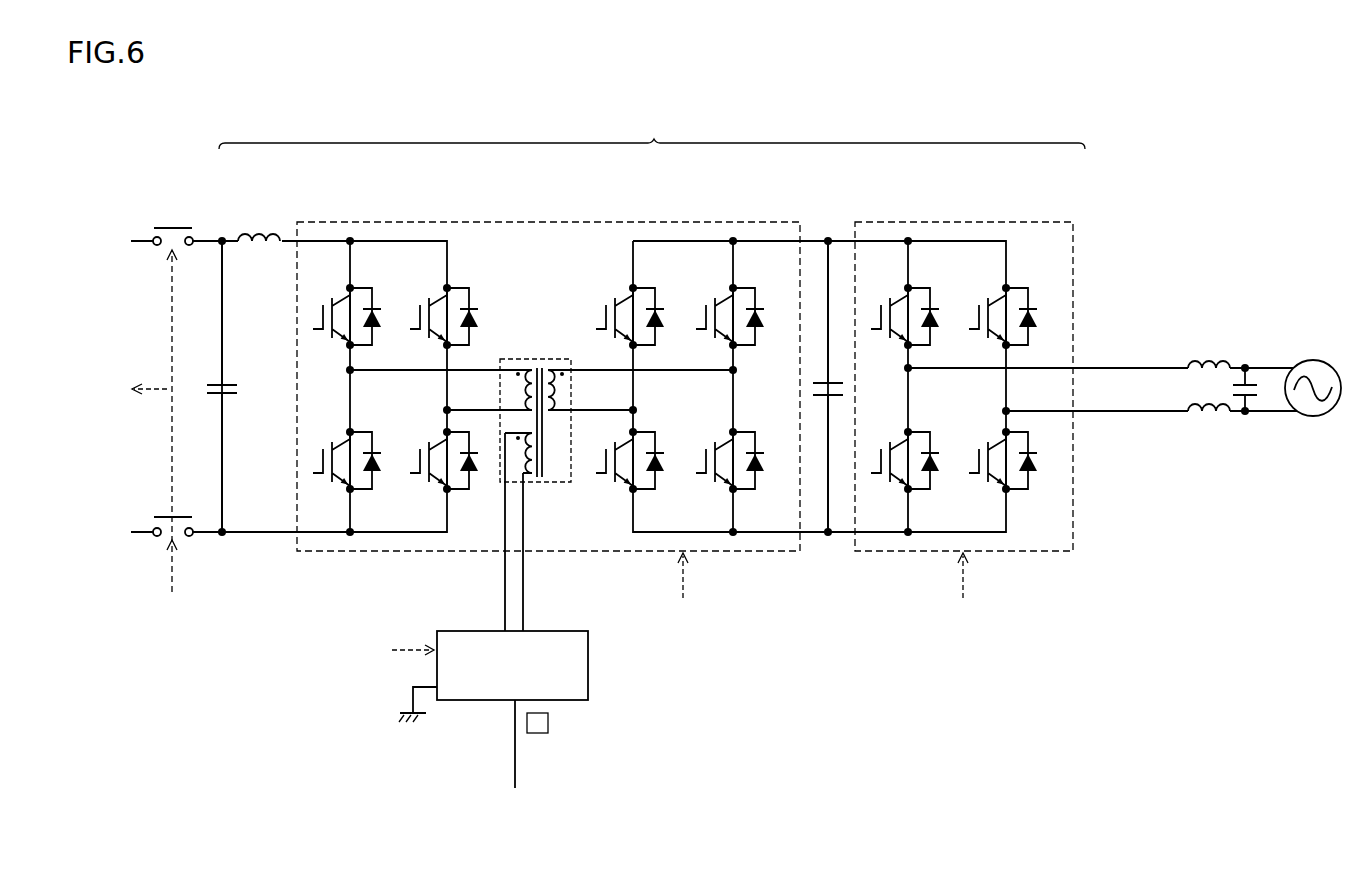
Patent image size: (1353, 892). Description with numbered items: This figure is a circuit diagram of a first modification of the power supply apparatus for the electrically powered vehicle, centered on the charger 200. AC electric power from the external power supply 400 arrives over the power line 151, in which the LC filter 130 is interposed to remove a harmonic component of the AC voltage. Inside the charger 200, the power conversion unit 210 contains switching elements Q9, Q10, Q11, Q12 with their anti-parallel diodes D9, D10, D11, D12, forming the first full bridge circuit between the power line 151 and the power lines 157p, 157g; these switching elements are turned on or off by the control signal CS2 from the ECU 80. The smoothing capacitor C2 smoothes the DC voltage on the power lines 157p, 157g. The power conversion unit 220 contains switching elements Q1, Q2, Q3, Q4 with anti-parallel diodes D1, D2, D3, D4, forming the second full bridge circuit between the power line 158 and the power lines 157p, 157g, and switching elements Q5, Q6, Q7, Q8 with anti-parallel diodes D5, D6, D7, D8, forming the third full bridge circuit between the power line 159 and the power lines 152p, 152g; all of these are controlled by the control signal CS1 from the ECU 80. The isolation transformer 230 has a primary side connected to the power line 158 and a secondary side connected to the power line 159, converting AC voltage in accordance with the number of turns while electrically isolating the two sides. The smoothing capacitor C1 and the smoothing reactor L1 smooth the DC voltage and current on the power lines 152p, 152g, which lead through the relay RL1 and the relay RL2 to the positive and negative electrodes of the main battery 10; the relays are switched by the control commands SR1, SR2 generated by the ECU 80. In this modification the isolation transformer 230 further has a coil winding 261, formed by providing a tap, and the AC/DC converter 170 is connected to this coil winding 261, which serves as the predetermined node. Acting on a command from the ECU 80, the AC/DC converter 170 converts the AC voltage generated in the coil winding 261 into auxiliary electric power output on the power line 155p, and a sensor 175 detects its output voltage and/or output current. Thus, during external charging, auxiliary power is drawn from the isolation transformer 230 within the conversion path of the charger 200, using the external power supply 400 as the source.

The charger 200 is at (652, 131).
The relay RL1 is at (172, 222).
The relay RL2 is at (162, 540).
The control command SR1 is at (175, 438).
The control command SR2 is at (175, 438).
The main battery 10 is at (117, 390).
The smoothing reactor L1 is at (256, 234).
The smoothing capacitor C1 is at (237, 386).
The power line 152p is at (320, 241).
The power line 152g is at (317, 537).
The power conversion unit 220 is at (553, 222).
The power conversion unit 210 is at (965, 222).
The power line 157p is at (762, 241).
The power line 157g is at (765, 533).
The smoothing capacitor C2 is at (843, 382).
The switching element Q1 is at (606, 300).
The switching element Q2 is at (615, 483).
The switching element Q3 is at (706, 300).
The switching element Q4 is at (707, 444).
The switching element Q5 is at (323, 300).
The switching element Q6 is at (323, 444).
The switching element Q7 is at (420, 300).
The switching element Q8 is at (420, 444).
The switching element Q9 is at (881, 300).
The switching element Q10 is at (881, 444).
The switching element Q11 is at (979, 300).
The switching element Q12 is at (979, 444).
The anti-parallel diode D1 is at (663, 323).
The anti-parallel diode D2 is at (663, 466).
The anti-parallel diode D3 is at (763, 323).
The anti-parallel diode D4 is at (763, 466).
The anti-parallel diode D5 is at (380, 323).
The anti-parallel diode D6 is at (380, 466).
The anti-parallel diode D7 is at (477, 323).
The anti-parallel diode D8 is at (473, 486).
The anti-parallel diode D9 is at (938, 323).
The anti-parallel diode D10 is at (938, 466).
The anti-parallel diode D11 is at (1036, 323).
The anti-parallel diode D12 is at (1036, 466).
The power line 158 is at (587, 423).
The power line 159 is at (490, 420).
The isolation transformer 230 is at (562, 482).
The coil winding 261 is at (523, 476).
The AC/DC converter 170 is at (588, 664).
The ECU 80 is at (273, 650).
The power line 155p is at (515, 762).
The sensor 175 is at (548, 718).
The control signal CS1 is at (687, 588).
The control signal CS2 is at (961, 588).
The LC filter 130 is at (1214, 345).
The power line 151 is at (1158, 356).
The external power supply 400 is at (1311, 360).